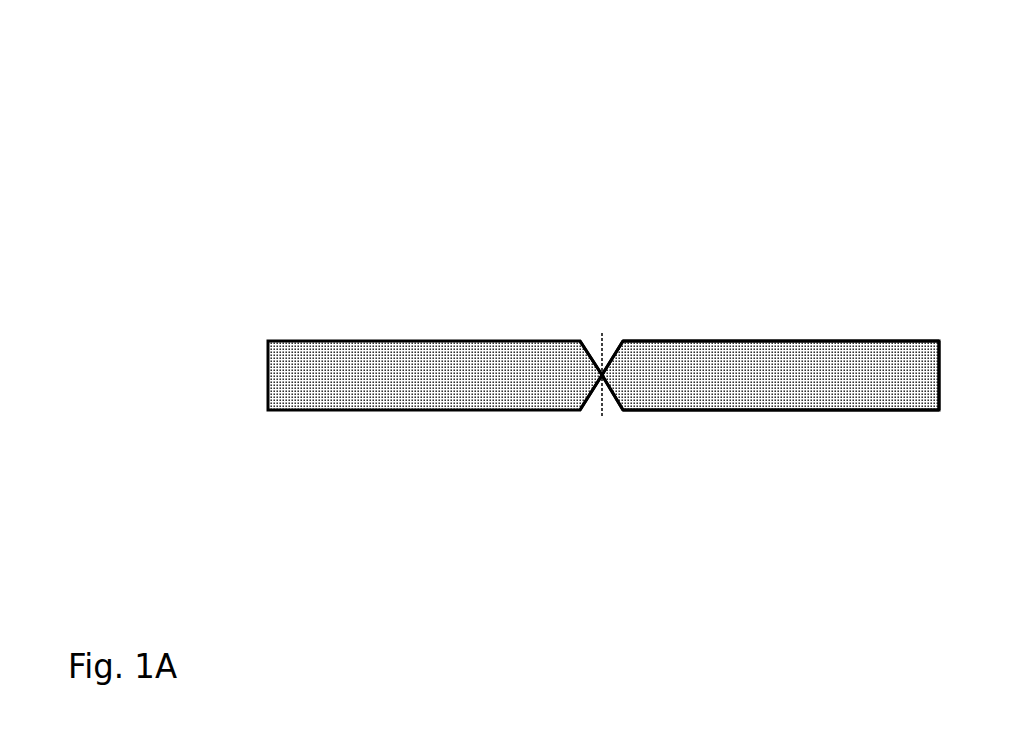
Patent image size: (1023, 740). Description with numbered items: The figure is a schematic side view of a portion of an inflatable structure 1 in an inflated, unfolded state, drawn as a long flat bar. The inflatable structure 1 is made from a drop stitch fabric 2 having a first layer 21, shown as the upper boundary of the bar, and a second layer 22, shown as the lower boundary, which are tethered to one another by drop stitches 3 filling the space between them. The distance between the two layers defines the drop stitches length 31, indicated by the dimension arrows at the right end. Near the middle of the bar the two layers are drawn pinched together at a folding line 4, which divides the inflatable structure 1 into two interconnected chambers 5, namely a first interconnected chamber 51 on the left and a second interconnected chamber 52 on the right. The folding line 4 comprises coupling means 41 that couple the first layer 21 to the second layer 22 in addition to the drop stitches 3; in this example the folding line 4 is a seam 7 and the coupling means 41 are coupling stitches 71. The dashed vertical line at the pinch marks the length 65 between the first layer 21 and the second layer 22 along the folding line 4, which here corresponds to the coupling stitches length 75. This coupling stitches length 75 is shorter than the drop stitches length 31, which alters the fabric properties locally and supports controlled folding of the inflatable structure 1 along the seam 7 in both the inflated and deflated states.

The inflatable structure 1 is at (533, 291).
The drop stitch fabric 2 is at (622, 406).
The drop stitches 3 is at (631, 375).
The folding line 4 is at (648, 417).
The interconnected chamber 5 is at (603, 333).
The seam 7 is at (648, 417).
The first layer 21 is at (752, 335).
The second layer 22 is at (803, 413).
The drop stitches length 31 is at (954, 310).
The coupling means 41 is at (648, 417).
The first interconnected chamber 51 is at (410, 327).
The second interconnected chamber 52 is at (790, 327).
The length between the first layer and the second layer along the folding line 65 is at (596, 361).
The coupling stitches 71 is at (618, 420).
The coupling stitches length 75 is at (596, 361).